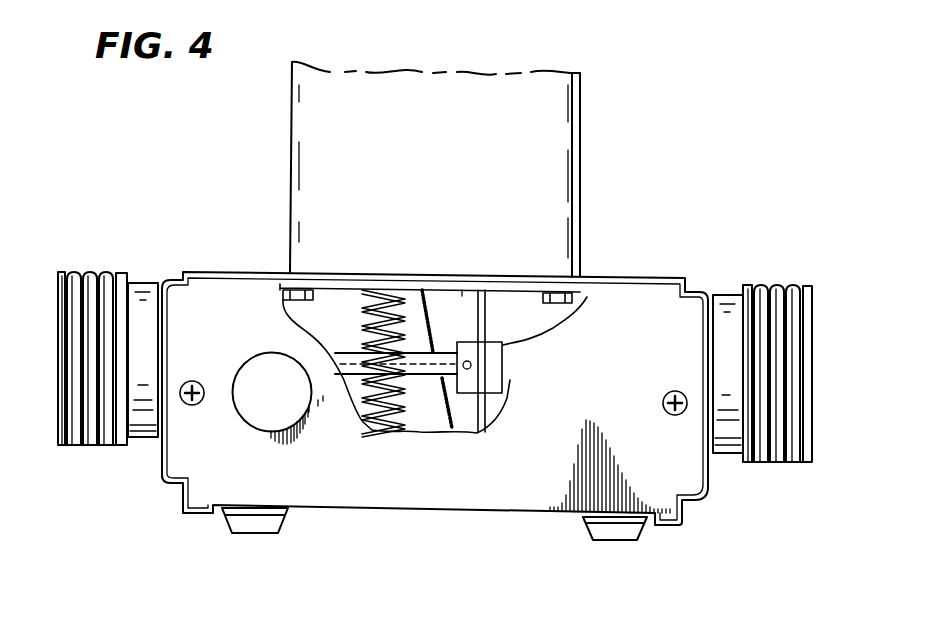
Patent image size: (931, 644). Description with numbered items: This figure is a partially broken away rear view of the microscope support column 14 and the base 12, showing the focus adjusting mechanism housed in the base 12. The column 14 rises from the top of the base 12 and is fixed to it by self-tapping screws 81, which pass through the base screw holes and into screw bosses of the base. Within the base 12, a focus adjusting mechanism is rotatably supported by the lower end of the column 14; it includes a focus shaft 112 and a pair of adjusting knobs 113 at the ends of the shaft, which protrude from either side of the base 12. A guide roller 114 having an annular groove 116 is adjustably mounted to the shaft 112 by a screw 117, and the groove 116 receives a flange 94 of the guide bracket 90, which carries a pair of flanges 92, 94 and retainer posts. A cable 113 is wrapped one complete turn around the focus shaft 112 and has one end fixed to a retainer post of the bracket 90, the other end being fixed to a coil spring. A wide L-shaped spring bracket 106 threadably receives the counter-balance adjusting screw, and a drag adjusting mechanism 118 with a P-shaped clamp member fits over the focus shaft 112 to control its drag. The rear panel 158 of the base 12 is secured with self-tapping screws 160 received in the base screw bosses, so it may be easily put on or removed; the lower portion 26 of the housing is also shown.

The column 14 is at (292, 122).
The base 12 is at (230, 272).
The housing base 26 is at (160, 487).
The adjusting knobs 113 is at (97, 272).
The self-tapping screws 160 is at (192, 380).
The drag adjusting mechanism 118 is at (243, 418).
The guide bracket 90 is at (450, 290).
The flange 94 is at (467, 290).
The self-tapping screws 81 is at (292, 300).
The spring bracket 106 is at (368, 427).
The flange 92 is at (401, 405).
The shaft 112 is at (340, 352).
The annular groove 116 is at (487, 307).
The screw 117 is at (467, 360).
The guide roller 114 is at (505, 348).
The rear panel 158 is at (527, 508).